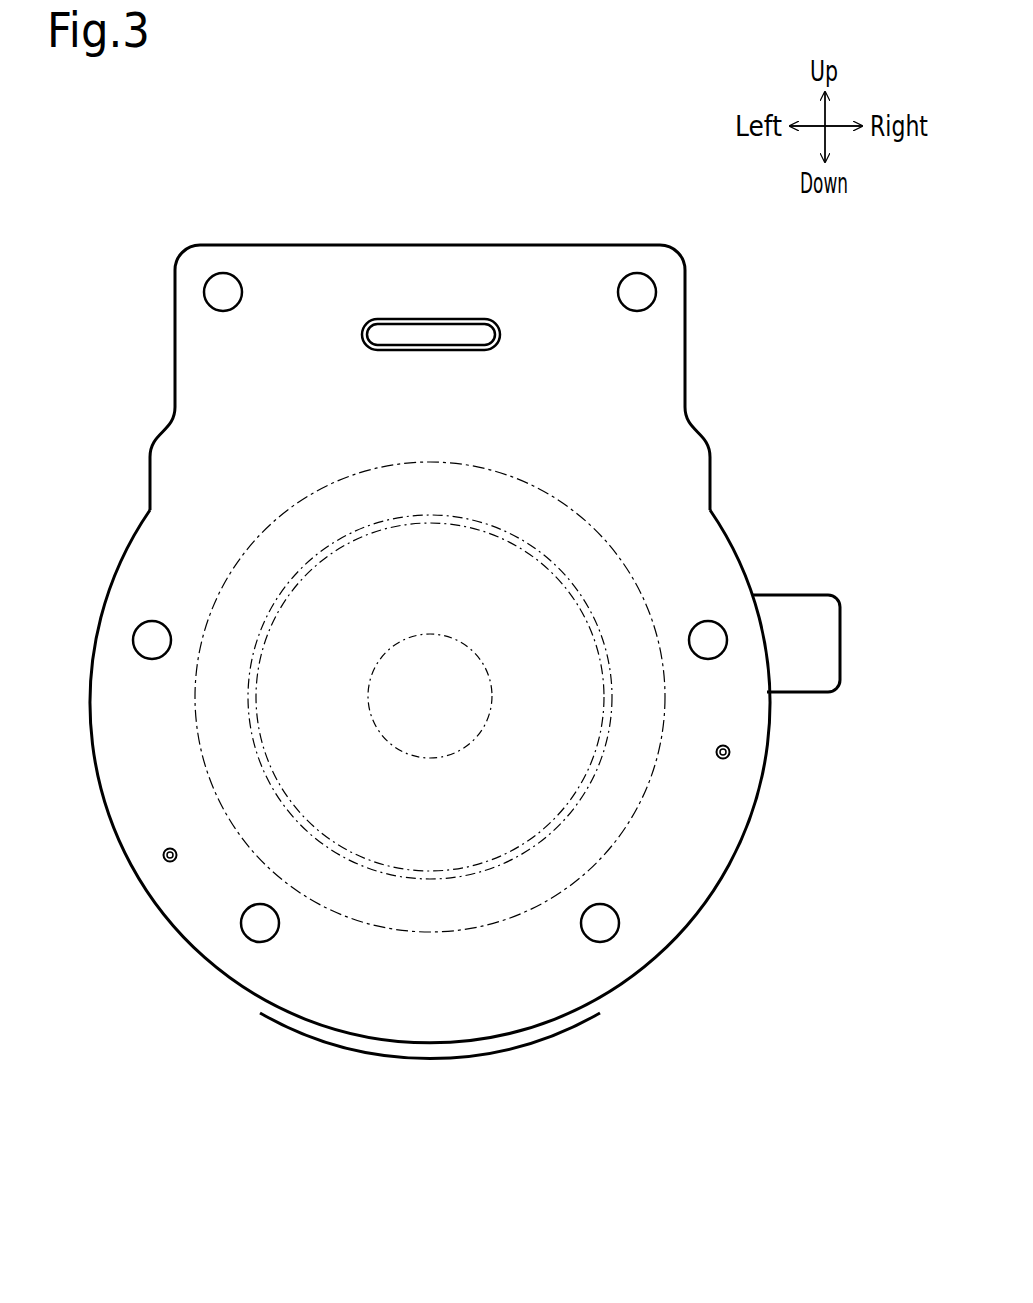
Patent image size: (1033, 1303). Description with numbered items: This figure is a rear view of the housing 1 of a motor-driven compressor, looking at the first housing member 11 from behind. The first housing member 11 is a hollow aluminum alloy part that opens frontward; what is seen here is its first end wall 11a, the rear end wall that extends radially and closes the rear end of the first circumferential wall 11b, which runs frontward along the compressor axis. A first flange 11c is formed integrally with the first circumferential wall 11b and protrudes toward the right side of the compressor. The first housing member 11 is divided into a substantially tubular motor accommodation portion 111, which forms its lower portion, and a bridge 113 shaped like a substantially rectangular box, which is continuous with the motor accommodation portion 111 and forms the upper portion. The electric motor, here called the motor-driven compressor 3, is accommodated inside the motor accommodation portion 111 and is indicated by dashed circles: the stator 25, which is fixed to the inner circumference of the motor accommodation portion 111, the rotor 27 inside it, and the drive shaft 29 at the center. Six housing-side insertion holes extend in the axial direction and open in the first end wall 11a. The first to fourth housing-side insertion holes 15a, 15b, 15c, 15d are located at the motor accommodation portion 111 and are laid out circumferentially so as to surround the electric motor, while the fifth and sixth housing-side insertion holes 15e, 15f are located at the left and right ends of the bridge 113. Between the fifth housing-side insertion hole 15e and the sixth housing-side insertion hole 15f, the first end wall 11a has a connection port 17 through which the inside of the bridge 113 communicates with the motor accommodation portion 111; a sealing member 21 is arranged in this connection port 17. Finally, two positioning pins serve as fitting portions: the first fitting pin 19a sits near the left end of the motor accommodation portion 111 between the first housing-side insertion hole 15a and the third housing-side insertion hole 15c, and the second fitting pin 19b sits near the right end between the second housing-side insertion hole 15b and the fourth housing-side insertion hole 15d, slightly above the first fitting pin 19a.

The housing 1 is at (181, 213).
The first housing member 11 is at (623, 244).
The first end wall 11a is at (522, 414).
The first circumferential wall 11b is at (741, 845).
The first flange 11c is at (795, 682).
The motor accommodation portion 111 is at (435, 975).
The bridge 113 is at (417, 265).
The motor-driven compressor 3 is at (588, 513).
The stator 25 is at (628, 580).
The rotor 27 is at (600, 698).
The drive shaft 29 is at (428, 745).
The sealing member 21 is at (458, 320).
The connection port 17 is at (428, 340).
The first housing-side insertion hole 15a is at (150, 648).
The second housing-side insertion hole 15b is at (706, 648).
The third housing-side insertion hole 15c is at (262, 928).
The fourth housing-side insertion hole 15d is at (596, 930).
The fifth housing-side insertion hole 15e is at (222, 300).
The sixth housing-side insertion hole 15f is at (635, 300).
The first fitting pin 19a is at (170, 849).
The second fitting pin 19b is at (722, 758).